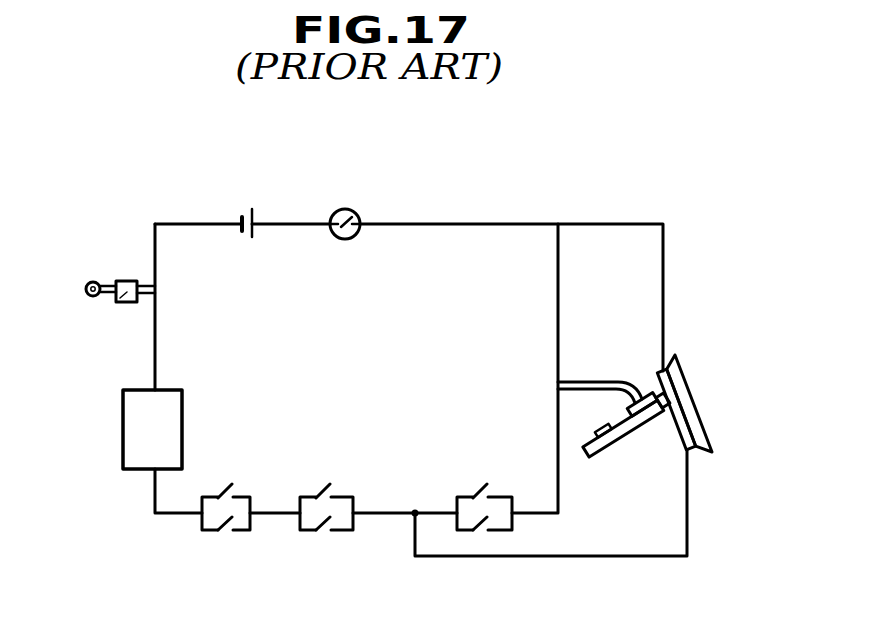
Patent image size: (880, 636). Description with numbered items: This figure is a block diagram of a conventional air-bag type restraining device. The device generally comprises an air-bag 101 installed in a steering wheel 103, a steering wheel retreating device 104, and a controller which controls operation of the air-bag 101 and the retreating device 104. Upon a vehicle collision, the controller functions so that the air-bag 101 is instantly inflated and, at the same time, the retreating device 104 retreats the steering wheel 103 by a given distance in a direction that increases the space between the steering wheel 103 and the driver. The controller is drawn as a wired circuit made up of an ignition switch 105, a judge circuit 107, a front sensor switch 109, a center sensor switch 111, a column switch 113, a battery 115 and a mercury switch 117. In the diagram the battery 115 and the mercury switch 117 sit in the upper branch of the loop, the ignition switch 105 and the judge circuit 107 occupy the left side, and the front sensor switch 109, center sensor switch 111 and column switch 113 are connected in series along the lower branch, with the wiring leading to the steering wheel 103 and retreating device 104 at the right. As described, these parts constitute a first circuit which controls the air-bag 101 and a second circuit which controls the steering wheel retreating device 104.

The air-bag 101 is at (683, 431).
The steering wheel 103 is at (683, 373).
The steering wheel retreating device 104 is at (625, 417).
The ignition switch 105 is at (120, 302).
The judge circuit 107 is at (140, 417).
The front sensor switch 109 is at (212, 495).
The center sensor switch 111 is at (317, 493).
The column switch 113 is at (472, 498).
The battery 115 is at (247, 208).
The mercury switch 117 is at (352, 213).